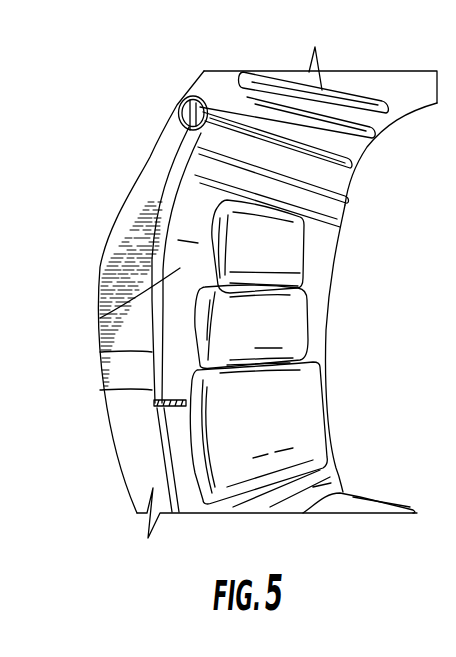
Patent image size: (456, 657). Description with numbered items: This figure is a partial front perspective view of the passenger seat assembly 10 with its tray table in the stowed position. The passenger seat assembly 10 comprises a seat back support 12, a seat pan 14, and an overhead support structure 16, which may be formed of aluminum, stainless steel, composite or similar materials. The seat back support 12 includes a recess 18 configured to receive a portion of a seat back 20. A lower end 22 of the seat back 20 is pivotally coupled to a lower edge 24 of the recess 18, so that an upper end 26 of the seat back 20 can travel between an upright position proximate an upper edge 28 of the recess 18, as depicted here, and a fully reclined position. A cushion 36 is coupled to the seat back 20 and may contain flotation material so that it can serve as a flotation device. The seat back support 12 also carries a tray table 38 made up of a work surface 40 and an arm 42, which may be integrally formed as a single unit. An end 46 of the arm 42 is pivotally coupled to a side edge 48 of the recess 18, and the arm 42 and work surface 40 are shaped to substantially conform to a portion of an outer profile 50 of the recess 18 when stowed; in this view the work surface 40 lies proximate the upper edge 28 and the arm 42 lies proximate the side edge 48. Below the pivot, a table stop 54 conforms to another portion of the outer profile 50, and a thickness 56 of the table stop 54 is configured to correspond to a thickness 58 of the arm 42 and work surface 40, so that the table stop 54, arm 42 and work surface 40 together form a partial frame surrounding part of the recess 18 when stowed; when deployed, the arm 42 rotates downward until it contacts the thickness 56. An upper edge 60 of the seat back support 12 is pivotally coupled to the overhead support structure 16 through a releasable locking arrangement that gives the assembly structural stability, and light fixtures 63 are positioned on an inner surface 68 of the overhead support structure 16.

The passenger seat assembly 10 is at (117, 121).
The seat back support 12 is at (100, 268).
The seat pan 14 is at (352, 497).
The overhead support structure 16 is at (392, 98).
The recess 18 is at (306, 228).
The seat back 20 is at (300, 335).
The lower end 22 is at (336, 468).
The lower edge 24 is at (206, 503).
The upper end 26 is at (235, 222).
The upper edge 28 is at (305, 218).
The cushion 36 is at (314, 394).
The tray table 38 is at (322, 199).
The work surface 40 is at (192, 96).
The arm 42 is at (100, 318).
The end 46 is at (155, 406).
The side edge 48 is at (100, 390).
The outer profile 50 is at (309, 292).
The table stop 54 is at (165, 425).
The thickness 56 is at (157, 411).
The thickness 58 is at (100, 352).
The upper edge 60 is at (163, 133).
The light fixtures 63 is at (330, 84).
The inner surface 68 is at (402, 100).